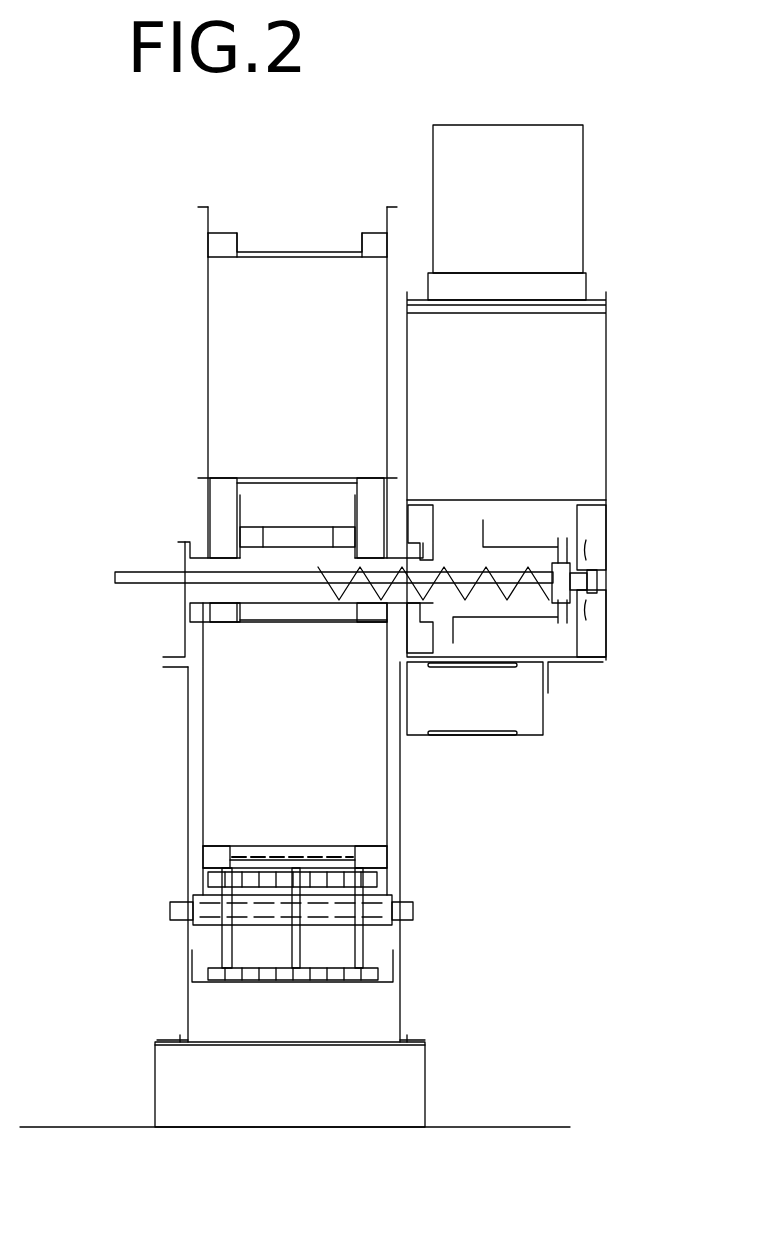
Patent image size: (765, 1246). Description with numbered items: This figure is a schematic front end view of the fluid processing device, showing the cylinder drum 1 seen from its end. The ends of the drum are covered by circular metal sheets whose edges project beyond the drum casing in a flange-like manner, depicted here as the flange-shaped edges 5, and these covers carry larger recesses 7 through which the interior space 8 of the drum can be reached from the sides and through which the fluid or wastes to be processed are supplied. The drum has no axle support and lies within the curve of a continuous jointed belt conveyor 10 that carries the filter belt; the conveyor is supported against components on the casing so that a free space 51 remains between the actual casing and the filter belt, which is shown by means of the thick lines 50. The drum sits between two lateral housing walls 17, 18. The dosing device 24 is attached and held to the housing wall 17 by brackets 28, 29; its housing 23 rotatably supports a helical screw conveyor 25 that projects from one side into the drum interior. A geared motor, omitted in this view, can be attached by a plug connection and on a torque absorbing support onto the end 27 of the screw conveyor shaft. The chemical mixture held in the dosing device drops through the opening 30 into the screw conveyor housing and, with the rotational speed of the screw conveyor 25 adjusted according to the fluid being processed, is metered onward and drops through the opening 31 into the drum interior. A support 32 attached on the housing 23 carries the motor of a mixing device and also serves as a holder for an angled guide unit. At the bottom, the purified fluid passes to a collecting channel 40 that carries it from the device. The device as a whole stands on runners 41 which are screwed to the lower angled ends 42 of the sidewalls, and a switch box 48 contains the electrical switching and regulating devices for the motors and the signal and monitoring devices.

The cylinder drum 1 is at (268, 417).
The flange-shaped edges 5 is at (208, 205).
The recesses 7 is at (207, 518).
The interior space 8 is at (311, 381).
The jointed belt conveyor 10 is at (333, 968).
The housing wall 17 is at (400, 850).
The housing wall 18 is at (187, 853).
The housing 23 is at (408, 618).
The dosing device 24 is at (535, 505).
The helical screw conveyor 25 is at (503, 590).
The shaft end 27 is at (145, 583).
The bracket 28 is at (548, 703).
The bracket 29 is at (185, 735).
The opening 30 is at (457, 527).
The opening 31 is at (300, 622).
The support 32 is at (300, 527).
The collecting channel 40 is at (318, 1020).
The runners 41 is at (405, 1082).
The lower angled ends 42 is at (184, 1040).
The switch box 48 is at (532, 220).
The thick lines 50 is at (348, 875).
The free space 51 is at (315, 852).